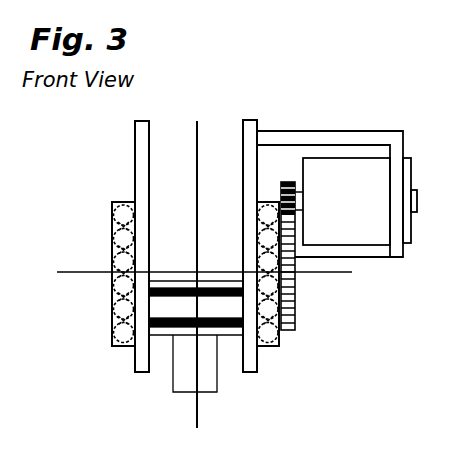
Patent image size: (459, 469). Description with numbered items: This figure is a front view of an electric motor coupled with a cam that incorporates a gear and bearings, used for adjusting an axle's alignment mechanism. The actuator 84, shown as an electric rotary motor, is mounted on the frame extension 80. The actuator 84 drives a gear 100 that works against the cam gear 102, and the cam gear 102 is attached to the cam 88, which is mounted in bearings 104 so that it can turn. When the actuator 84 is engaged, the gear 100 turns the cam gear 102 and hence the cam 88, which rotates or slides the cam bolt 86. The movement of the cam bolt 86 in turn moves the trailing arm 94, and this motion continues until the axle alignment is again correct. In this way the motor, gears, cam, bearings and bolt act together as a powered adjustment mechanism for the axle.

The frame extension 80 is at (137, 134).
The actuator 84 is at (378, 238).
The cam bolt 86 is at (227, 331).
The cam 88 is at (112, 205).
The trailing arm 94 is at (187, 382).
The gear 100 is at (290, 182).
The cam gear 102 is at (296, 328).
The bearings 104 is at (112, 332).